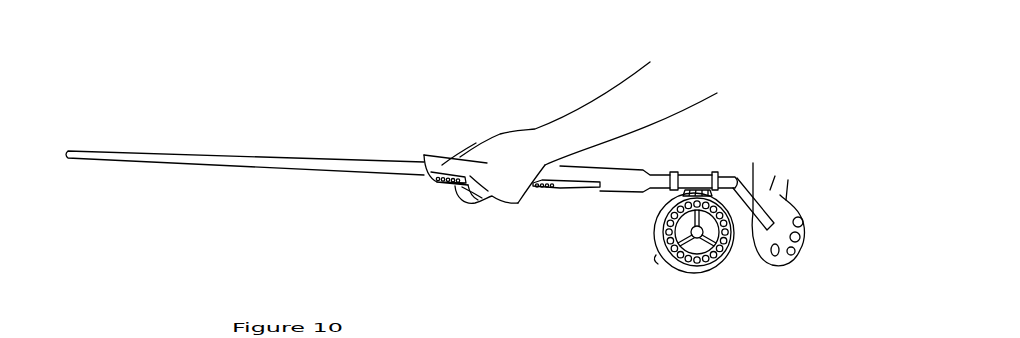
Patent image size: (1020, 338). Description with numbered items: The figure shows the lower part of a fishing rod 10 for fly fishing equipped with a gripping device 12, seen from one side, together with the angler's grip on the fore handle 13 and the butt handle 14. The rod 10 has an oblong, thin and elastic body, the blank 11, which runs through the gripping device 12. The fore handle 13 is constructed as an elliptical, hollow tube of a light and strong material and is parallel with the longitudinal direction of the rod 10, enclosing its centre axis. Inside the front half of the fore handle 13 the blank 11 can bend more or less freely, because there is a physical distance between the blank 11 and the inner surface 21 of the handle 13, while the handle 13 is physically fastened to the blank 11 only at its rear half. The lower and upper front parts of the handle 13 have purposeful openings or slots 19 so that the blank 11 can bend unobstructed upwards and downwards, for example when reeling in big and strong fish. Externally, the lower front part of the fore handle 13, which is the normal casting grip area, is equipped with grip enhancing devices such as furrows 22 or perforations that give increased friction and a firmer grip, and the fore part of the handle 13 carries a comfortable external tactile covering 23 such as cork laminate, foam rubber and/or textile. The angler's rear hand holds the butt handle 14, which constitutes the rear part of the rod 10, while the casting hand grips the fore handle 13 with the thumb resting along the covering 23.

The fishing rod 10 is at (182, 157).
The blank 11 is at (340, 164).
The gripping device 12 is at (592, 172).
The fore handle 13 is at (485, 155).
The butt handle 14 is at (792, 257).
The slots 19 is at (440, 188).
The inner surface 21 is at (437, 186).
The furrows 22 is at (472, 200).
The external tactile covering 23 is at (440, 166).